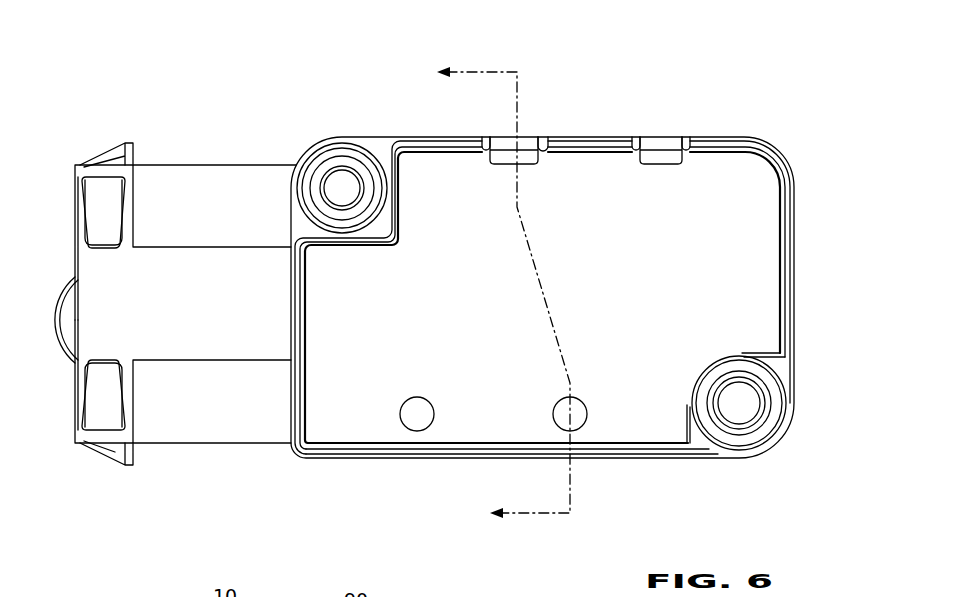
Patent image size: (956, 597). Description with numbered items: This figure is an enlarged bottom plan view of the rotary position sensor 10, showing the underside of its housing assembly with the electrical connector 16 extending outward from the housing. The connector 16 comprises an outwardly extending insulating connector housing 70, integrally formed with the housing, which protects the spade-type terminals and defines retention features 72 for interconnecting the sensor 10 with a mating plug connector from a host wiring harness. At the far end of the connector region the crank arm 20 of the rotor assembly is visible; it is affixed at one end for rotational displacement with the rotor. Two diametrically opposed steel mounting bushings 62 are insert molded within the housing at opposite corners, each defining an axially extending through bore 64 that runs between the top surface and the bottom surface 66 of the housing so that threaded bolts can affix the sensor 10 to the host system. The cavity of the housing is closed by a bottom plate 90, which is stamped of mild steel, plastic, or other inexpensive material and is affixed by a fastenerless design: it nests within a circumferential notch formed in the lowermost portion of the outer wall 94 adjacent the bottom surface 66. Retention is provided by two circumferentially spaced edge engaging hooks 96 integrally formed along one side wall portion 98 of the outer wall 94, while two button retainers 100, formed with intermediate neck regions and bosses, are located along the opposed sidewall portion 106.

The rotary position sensor 10 is at (138, 70).
The electrical connector 16 is at (182, 433).
The crank arm 20 is at (67, 358).
The mounting bushing 62 is at (355, 170).
The through bore 64 is at (326, 191).
The bottom surface 66 is at (768, 225).
The connector housing 70 is at (205, 168).
The retention feature 72 is at (107, 150).
The bottom plate 90 is at (728, 192).
The outer wall 94 is at (328, 454).
The edge engaging hook 96 is at (528, 142).
The side wall portion 98 is at (605, 137).
The button retainer 100 is at (407, 417).
The opposed sidewall portion 106 is at (455, 447).